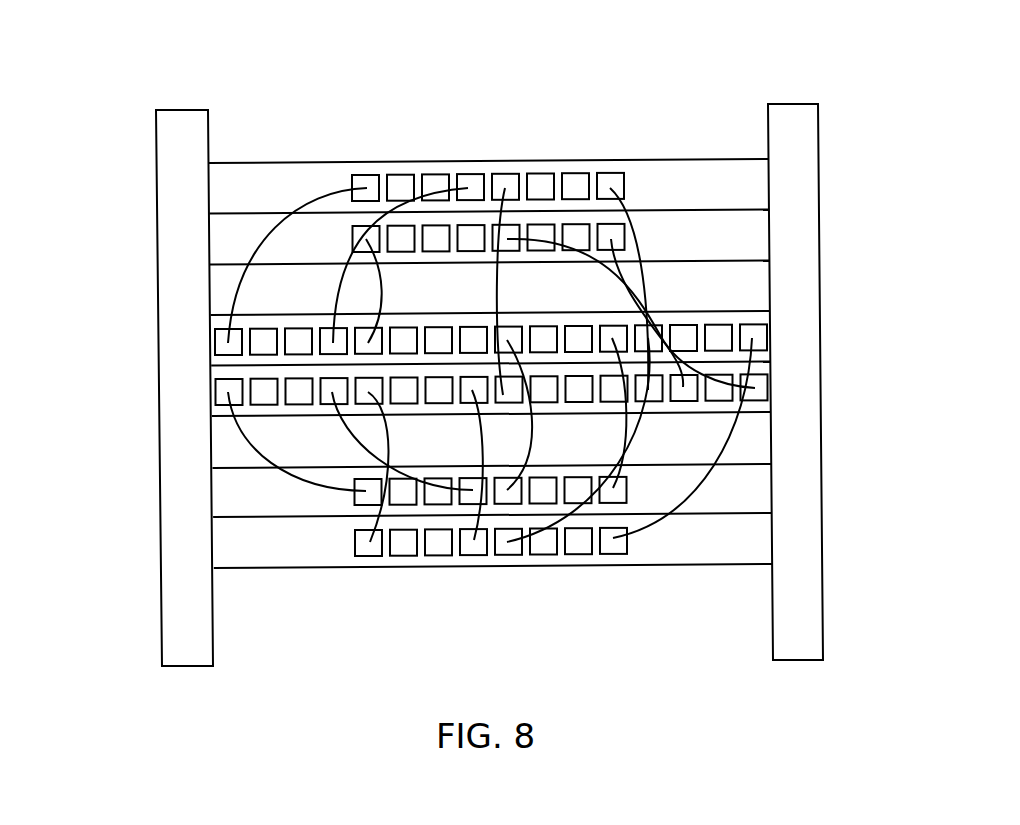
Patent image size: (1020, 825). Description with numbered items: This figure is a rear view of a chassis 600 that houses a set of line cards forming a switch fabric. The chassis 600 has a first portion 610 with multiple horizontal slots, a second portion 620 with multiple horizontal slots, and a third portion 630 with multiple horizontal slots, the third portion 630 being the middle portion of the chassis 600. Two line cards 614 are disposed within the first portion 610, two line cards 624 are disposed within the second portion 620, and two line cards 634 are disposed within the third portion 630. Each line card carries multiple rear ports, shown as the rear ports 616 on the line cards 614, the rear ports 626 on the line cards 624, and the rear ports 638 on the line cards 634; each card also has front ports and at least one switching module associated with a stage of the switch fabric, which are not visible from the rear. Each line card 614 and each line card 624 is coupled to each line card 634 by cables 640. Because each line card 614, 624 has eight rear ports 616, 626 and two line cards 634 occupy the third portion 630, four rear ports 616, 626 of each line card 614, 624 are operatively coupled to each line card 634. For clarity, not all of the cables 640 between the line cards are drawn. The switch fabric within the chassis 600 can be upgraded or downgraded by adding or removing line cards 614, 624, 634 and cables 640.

The chassis 600 is at (170, 53).
The first portion 610 is at (432, 145).
The line cards 614 is at (342, 138).
The rear ports 616 is at (405, 183).
The second portion 620 is at (433, 591).
The line cards 624 is at (233, 503).
The rear ports 626 is at (474, 555).
The third portion 630 is at (500, 363).
The line cards 634 is at (215, 378).
The rear ports 638 is at (217, 336).
The cables 640 is at (246, 447).